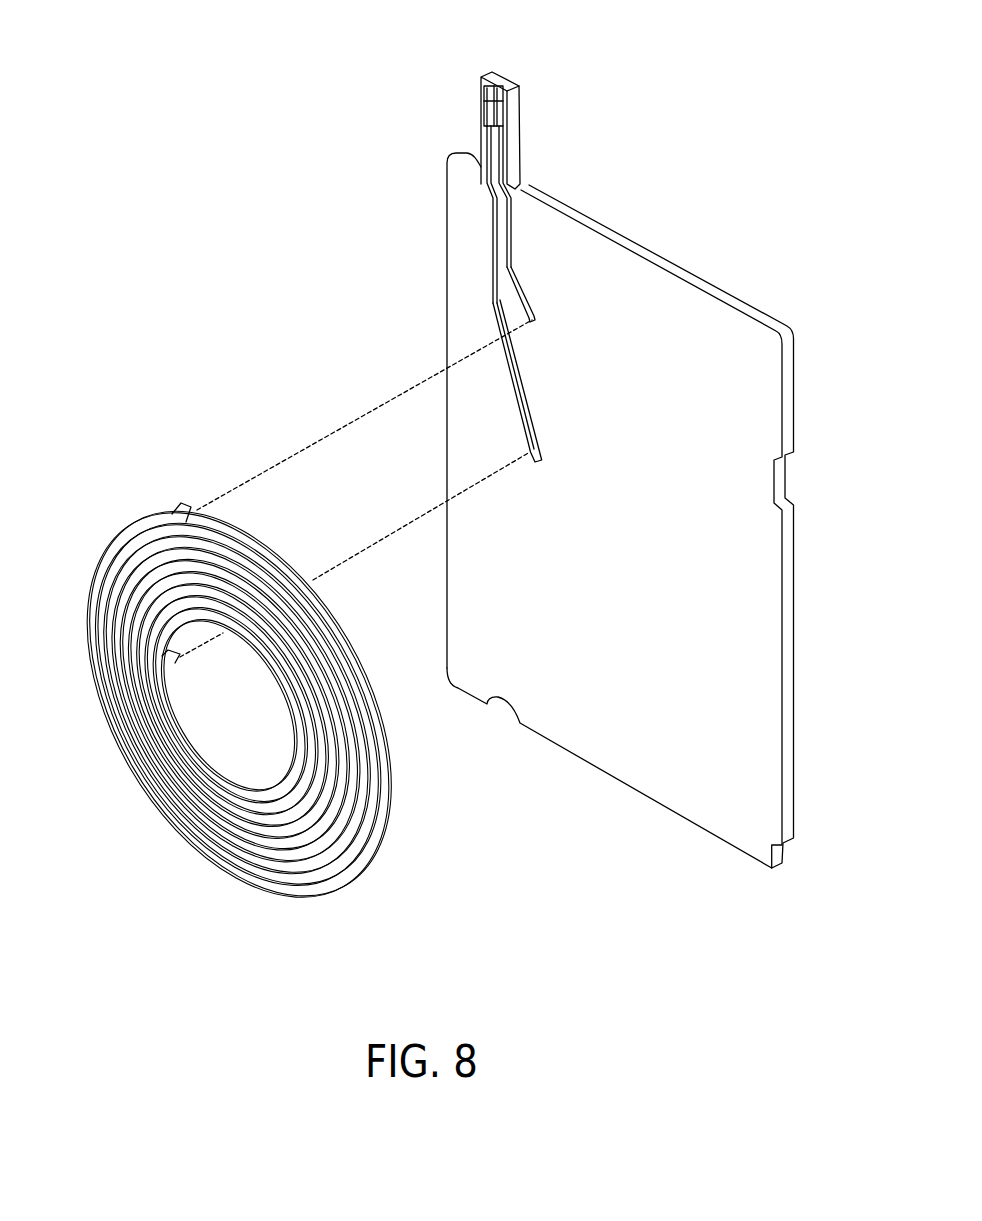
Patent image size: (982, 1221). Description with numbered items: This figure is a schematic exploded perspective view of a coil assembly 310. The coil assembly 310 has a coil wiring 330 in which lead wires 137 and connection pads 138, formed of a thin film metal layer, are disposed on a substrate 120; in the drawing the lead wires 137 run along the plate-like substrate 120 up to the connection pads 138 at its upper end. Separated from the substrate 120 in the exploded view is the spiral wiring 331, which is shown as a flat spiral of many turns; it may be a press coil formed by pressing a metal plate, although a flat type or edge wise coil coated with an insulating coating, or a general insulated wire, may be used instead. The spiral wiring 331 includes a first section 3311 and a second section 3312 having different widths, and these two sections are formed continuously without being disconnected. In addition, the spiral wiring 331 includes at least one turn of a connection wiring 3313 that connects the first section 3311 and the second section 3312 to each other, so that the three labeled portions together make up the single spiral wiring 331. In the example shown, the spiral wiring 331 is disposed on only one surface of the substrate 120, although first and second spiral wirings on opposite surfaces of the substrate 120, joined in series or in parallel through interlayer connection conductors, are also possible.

The coil assembly 310 is at (675, 53).
The substrate 120 is at (660, 287).
The lead wires 137 is at (492, 254).
The connection pads 138 is at (482, 117).
The coil wiring 330 is at (482, 320).
The spiral wiring 331 is at (350, 981).
The first section 3311 is at (213, 863).
The second section 3312 is at (257, 813).
The connection wiring 3313 is at (282, 847).